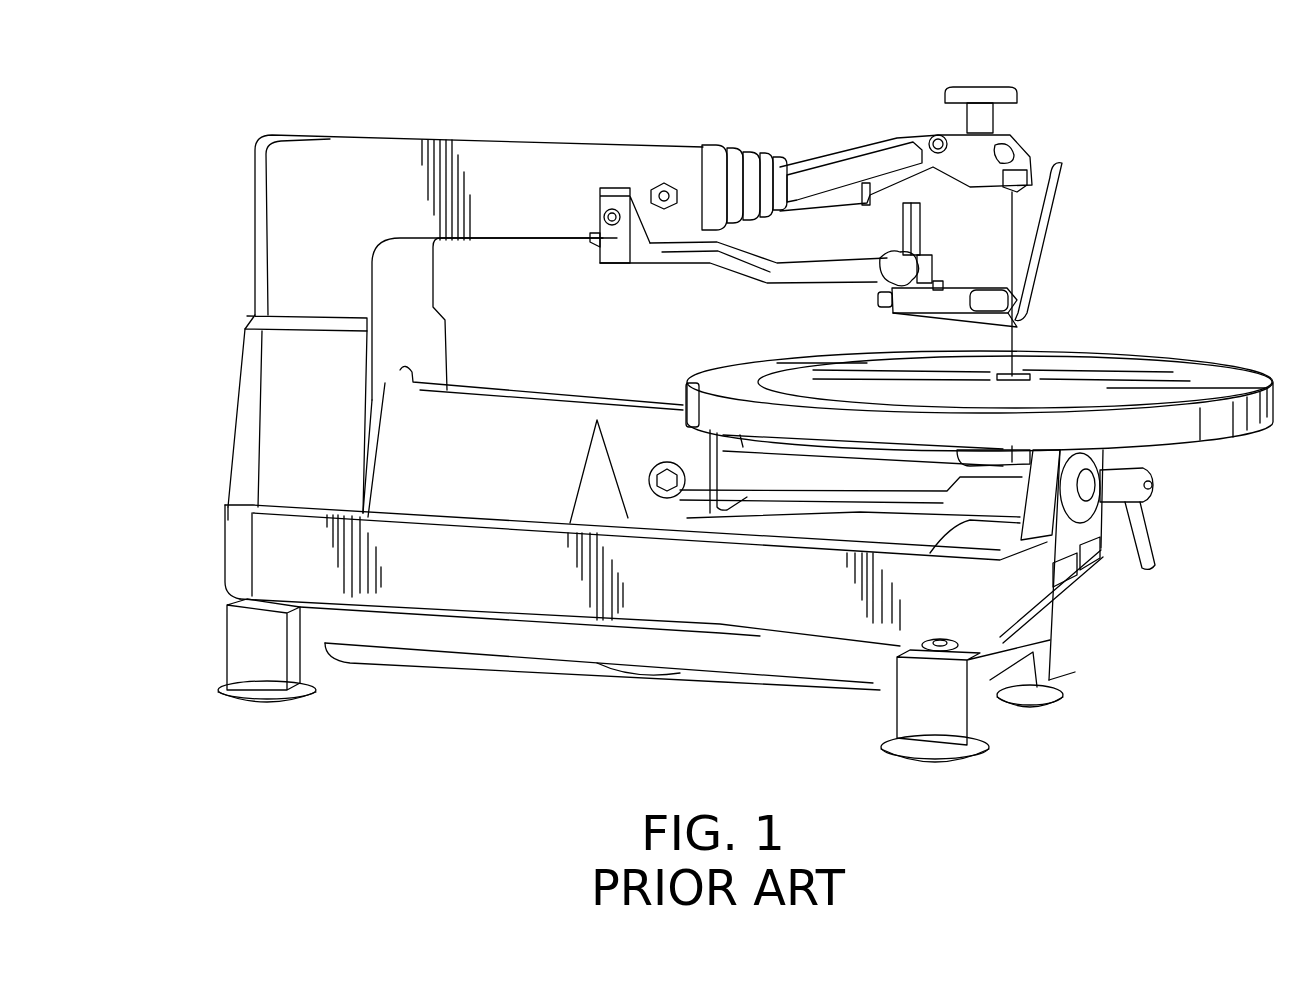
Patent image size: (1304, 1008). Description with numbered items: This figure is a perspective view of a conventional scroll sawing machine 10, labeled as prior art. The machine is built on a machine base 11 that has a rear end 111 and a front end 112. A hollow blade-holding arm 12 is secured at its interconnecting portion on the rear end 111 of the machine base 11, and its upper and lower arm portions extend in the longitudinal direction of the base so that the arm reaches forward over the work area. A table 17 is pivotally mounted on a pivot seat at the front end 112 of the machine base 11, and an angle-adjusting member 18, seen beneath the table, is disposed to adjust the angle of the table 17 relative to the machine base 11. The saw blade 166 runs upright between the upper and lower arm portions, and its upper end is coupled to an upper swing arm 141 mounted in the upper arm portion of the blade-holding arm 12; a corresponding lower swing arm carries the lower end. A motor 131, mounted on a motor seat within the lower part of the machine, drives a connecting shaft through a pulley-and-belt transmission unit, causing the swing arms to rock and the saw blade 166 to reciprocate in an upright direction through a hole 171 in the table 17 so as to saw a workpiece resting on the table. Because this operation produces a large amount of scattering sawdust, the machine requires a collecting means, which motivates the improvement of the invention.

The scroll sawing machine 10 is at (208, 541).
The machine base 11 is at (768, 680).
The rear end 111 is at (223, 527).
The front end 112 is at (1053, 640).
The blade-holding arm 12 is at (254, 222).
The motor 131 is at (485, 660).
The upper swing arm 141 is at (845, 160).
The saw blade 166 is at (1062, 185).
The table 17 is at (1193, 360).
The hole 171 is at (1017, 378).
The angle-adjusting member 18 is at (1153, 533).